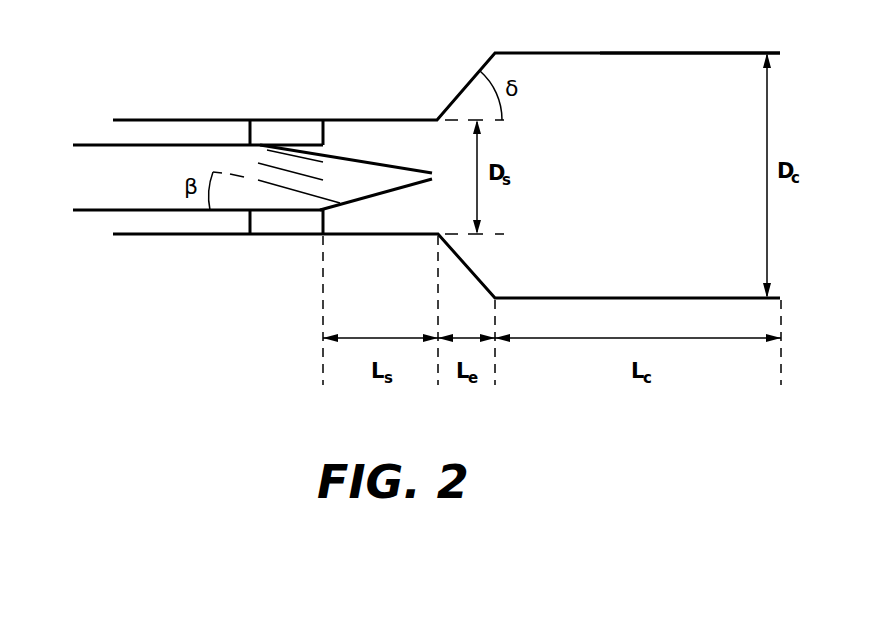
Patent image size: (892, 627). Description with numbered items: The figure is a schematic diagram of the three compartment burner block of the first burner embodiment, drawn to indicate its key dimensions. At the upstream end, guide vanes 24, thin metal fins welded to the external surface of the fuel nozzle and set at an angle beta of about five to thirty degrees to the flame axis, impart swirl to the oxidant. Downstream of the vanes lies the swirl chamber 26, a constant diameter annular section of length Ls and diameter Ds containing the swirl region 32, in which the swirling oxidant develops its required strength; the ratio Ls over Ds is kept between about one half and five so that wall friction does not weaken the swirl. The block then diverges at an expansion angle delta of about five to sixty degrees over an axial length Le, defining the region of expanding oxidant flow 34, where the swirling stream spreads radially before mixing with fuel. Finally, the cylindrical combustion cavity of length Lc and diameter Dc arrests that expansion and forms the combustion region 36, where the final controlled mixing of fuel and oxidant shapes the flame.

The guide vanes 24 is at (281, 120).
The swirl chamber 26 is at (407, 120).
The swirl region 32 is at (380, 132).
The region of expanding oxidant flow 34 is at (475, 272).
The combustion region 36 is at (650, 113).